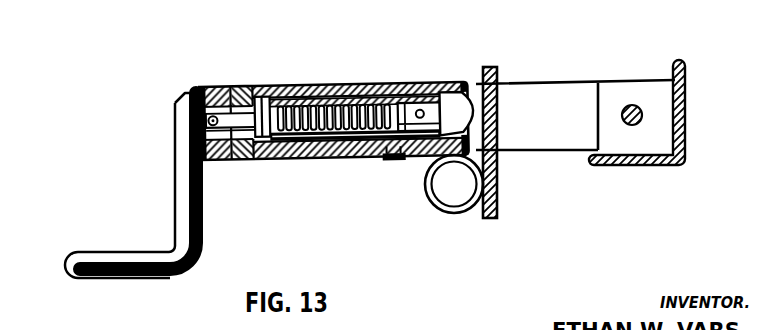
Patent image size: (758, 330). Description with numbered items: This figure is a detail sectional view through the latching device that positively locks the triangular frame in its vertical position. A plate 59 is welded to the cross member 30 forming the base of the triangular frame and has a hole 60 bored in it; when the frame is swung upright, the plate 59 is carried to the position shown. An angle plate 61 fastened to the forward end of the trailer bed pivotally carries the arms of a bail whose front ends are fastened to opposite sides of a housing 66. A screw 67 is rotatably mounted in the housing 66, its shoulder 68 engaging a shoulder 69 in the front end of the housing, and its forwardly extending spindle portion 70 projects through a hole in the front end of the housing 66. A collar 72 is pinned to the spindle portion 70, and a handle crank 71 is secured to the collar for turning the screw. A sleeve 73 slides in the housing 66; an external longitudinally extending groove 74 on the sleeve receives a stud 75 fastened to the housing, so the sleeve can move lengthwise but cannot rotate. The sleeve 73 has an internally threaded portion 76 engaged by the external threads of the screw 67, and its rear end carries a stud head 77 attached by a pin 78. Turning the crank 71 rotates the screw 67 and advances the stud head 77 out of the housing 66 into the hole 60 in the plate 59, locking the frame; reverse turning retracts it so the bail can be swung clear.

The cross member 30 is at (462, 213).
The plate 59 is at (497, 167).
The hole 60 is at (493, 120).
The angle plate 61 is at (686, 102).
The housing 66 is at (317, 158).
The screw 67 is at (297, 158).
The shoulder 68 is at (259, 160).
The shoulder 69 is at (249, 86).
The spindle portion 70 is at (242, 162).
The handle crank 71 is at (148, 250).
The collar 72 is at (207, 88).
The sleeve 73 is at (353, 86).
The longitudinally extending groove 74 is at (343, 160).
The stud 75 is at (392, 160).
The internally threaded portion 76 is at (302, 87).
The stud head 77 is at (459, 88).
The pin 78 is at (424, 86).